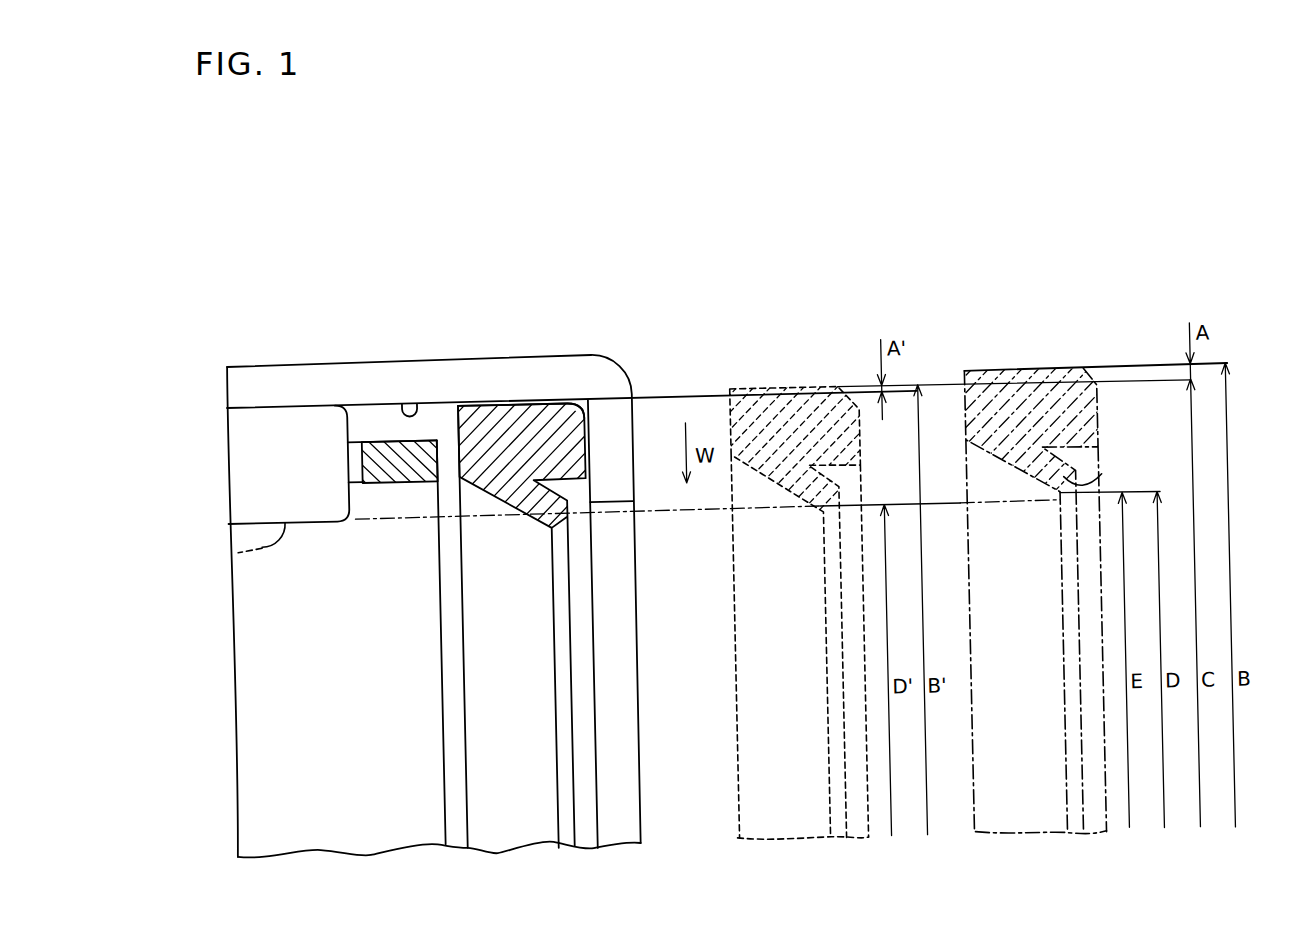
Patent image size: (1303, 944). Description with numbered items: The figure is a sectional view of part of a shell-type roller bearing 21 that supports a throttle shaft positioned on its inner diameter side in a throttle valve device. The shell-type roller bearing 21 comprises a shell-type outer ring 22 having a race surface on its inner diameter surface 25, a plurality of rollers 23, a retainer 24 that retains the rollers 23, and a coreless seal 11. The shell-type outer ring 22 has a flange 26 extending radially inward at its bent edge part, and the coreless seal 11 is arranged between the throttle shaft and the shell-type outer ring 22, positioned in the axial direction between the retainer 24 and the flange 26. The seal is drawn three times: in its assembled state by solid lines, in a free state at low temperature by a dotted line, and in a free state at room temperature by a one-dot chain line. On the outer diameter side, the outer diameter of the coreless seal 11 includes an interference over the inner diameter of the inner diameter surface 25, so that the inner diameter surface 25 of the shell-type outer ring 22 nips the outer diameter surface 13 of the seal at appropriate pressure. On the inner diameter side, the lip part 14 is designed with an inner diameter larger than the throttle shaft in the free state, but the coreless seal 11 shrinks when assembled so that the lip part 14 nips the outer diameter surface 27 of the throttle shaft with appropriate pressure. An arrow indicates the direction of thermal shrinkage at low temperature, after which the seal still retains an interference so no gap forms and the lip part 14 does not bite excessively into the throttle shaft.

The coreless seal 11 is at (483, 428).
The outer diameter surface 13 is at (528, 400).
The lip part 14 is at (1099, 489).
The shell-type roller bearing 21 is at (615, 256).
The shell-type outer ring 22 is at (317, 385).
The rollers 23 is at (279, 439).
The retainer 24 is at (386, 450).
The inner diameter surface 25 is at (415, 406).
The flange 26 is at (614, 454).
The outer diameter surface of the throttle shaft 27 is at (227, 555).